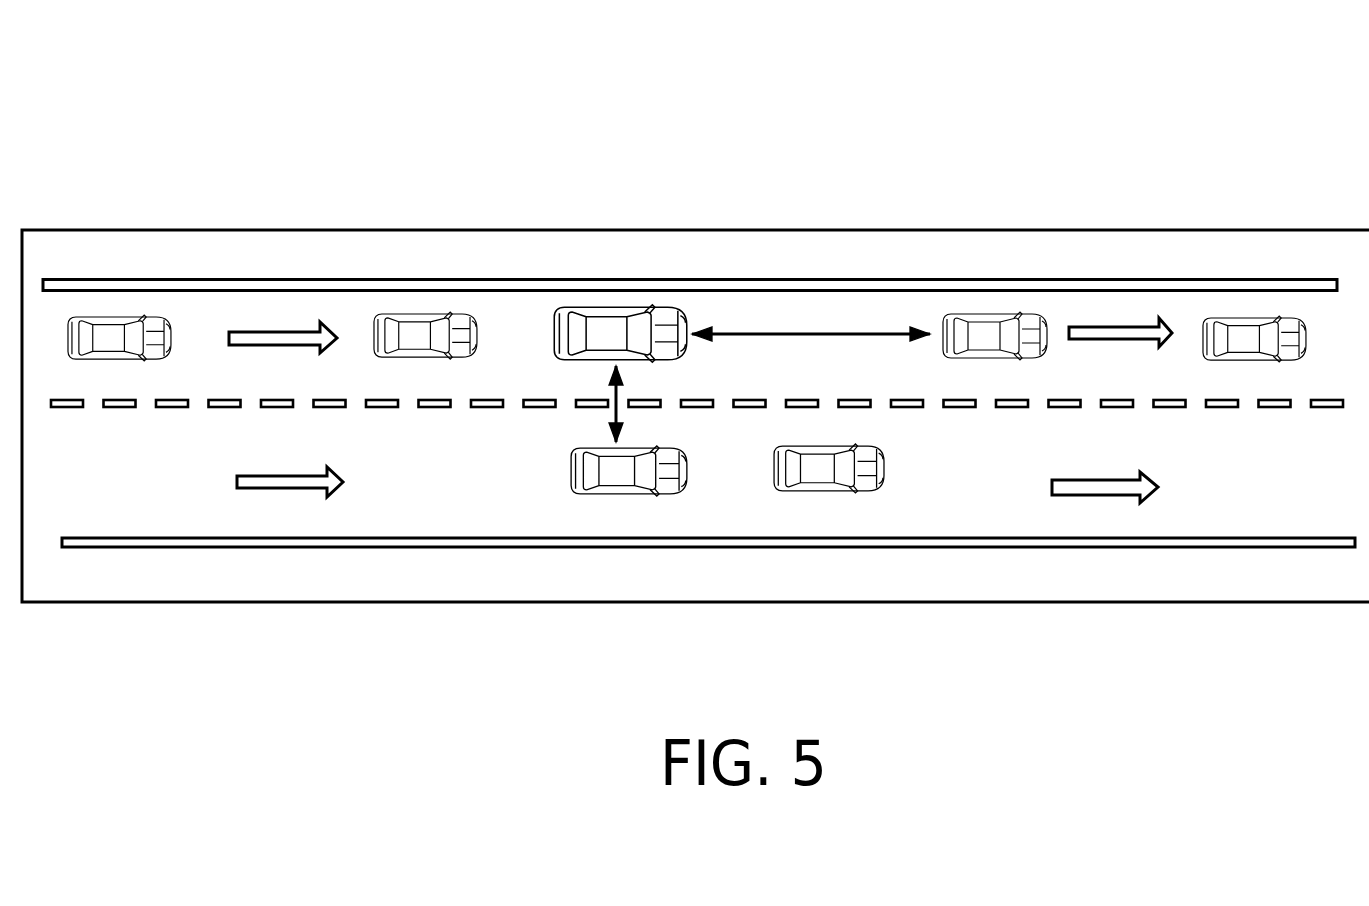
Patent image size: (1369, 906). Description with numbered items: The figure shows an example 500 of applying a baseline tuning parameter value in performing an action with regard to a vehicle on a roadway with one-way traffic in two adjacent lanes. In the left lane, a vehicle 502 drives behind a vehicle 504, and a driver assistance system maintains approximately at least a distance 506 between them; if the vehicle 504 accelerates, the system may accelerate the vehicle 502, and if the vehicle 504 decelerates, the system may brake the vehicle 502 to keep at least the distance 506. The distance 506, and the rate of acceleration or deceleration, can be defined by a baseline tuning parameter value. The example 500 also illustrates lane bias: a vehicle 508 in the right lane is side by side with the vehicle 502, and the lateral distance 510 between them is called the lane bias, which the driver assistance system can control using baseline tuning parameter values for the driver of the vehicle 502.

The example 500 is at (1333, 57).
The vehicle 502 is at (690, 334).
The vehicle 504 is at (1047, 340).
The distance 506 is at (786, 338).
The vehicle 508 is at (570, 468).
The distance 510 is at (608, 415).